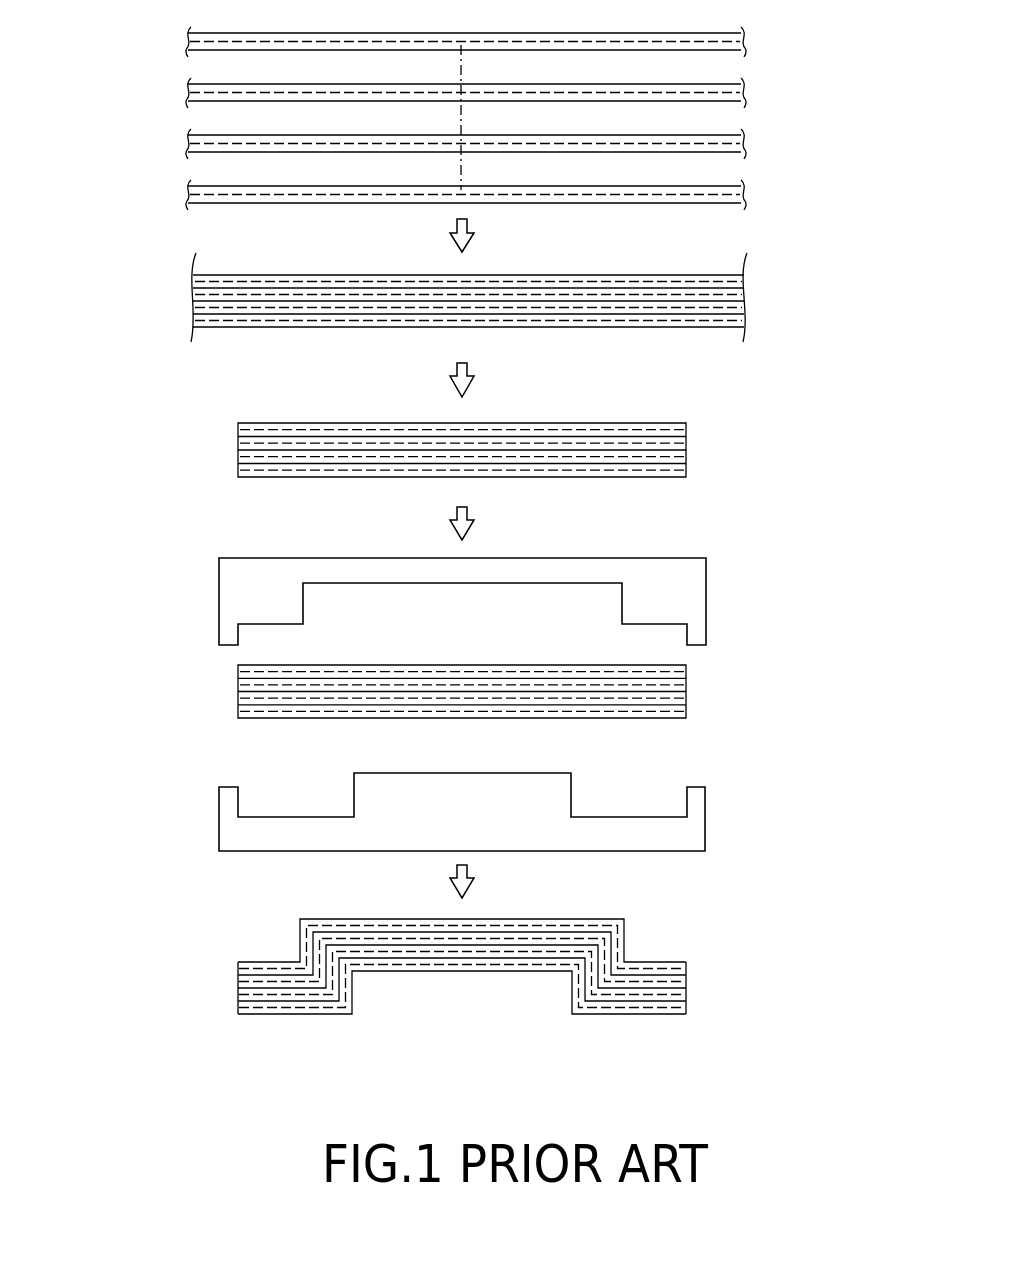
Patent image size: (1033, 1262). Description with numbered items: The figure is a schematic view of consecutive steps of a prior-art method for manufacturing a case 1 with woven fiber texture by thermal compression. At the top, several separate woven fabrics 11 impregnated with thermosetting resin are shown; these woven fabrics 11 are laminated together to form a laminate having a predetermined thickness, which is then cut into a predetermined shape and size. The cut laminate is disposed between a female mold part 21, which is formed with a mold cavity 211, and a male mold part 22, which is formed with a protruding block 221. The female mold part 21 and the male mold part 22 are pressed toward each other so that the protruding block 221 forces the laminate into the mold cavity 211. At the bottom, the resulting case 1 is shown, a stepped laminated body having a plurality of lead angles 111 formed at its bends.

The case 1 is at (665, 940).
The woven fabrics 11 is at (185, 41).
The lead angles 111 is at (356, 1015).
The female mold part 21 is at (706, 588).
The mold cavity 211 is at (490, 583).
The male mold part 22 is at (706, 797).
The protruding block 221 is at (560, 788).